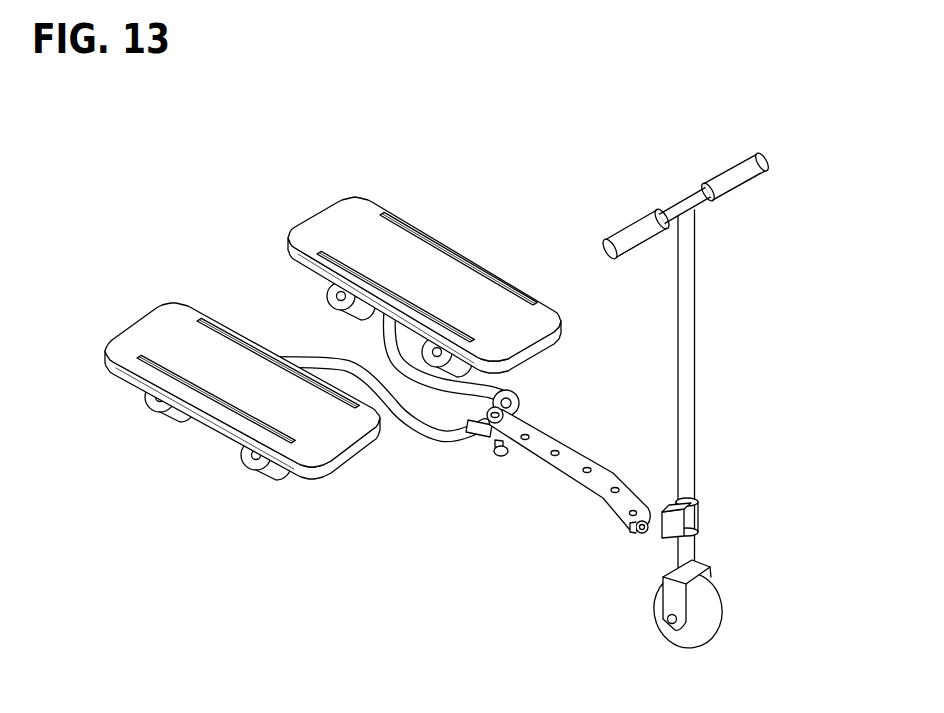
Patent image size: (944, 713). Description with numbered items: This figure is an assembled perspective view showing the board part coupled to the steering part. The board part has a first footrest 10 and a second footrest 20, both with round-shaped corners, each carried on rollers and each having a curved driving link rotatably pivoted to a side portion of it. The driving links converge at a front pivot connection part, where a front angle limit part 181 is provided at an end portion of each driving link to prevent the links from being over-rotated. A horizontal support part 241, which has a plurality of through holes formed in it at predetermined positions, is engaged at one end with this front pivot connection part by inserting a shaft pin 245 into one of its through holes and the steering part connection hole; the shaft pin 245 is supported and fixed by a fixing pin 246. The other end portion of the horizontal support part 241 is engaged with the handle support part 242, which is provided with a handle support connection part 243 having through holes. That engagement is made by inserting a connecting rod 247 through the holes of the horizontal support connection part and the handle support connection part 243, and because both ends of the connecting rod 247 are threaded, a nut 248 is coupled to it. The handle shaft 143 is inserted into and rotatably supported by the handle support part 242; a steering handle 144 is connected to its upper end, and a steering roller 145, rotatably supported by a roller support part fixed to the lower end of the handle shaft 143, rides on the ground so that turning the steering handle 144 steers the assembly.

The first footrest 10 is at (337, 223).
The second footrest 20 is at (150, 318).
The handle shaft 143 is at (697, 366).
The steering handle 144 is at (641, 229).
The steering roller 145 is at (714, 606).
The front angle limit part 181 is at (475, 431).
The horizontal support part 241 is at (578, 454).
The handle support part 242 is at (700, 510).
The handle support connection part 243 is at (674, 529).
The shaft pin 245 is at (513, 396).
The fixing pin 246 is at (503, 455).
The connecting rod 247 is at (630, 538).
The nut 248 is at (638, 531).